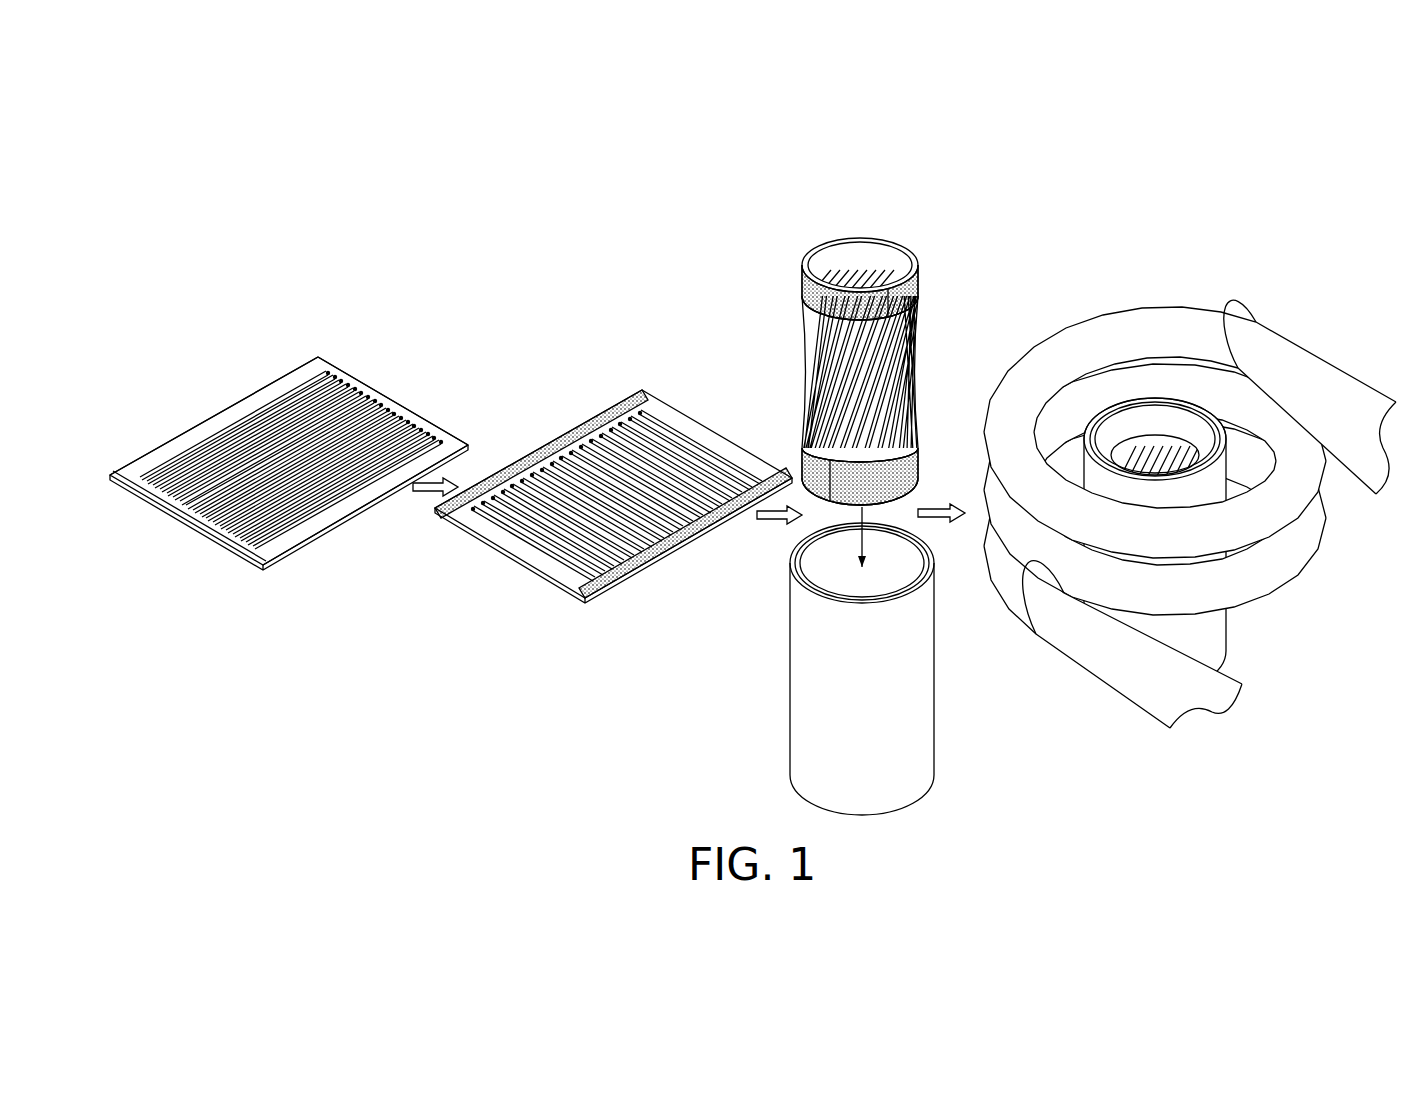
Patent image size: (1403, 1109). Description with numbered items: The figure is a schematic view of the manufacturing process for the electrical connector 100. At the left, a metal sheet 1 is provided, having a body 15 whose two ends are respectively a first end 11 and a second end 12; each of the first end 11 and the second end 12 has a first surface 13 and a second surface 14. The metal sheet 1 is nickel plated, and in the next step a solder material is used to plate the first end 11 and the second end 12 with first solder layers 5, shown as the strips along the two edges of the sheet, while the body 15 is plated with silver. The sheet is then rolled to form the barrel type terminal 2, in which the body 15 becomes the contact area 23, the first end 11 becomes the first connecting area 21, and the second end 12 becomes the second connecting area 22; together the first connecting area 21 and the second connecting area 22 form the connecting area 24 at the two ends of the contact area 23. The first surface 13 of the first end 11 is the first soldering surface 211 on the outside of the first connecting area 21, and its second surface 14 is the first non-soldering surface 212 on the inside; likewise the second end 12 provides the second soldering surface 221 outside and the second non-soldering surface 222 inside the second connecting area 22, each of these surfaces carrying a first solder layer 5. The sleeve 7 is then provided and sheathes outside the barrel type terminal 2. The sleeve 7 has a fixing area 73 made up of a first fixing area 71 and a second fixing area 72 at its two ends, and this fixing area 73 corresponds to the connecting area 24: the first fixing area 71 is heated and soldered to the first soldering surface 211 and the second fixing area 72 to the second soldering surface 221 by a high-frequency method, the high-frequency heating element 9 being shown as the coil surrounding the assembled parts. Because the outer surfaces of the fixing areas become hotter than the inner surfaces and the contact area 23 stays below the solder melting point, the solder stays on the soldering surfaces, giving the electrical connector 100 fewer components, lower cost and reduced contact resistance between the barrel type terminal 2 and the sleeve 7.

The metal sheet 1 is at (451, 472).
The first end 11 is at (207, 430).
The second end 12 is at (283, 543).
The first surface 13 is at (167, 455).
The second surface 14 is at (217, 414).
The body 15 is at (200, 527).
The first solder layer 5 is at (610, 407).
The barrel type terminal 2 is at (858, 341).
The first connecting area 21 is at (836, 266).
The first soldering surface 211 is at (803, 306).
The first non-soldering surface 212 is at (823, 258).
The second connecting area 22 is at (854, 450).
The second soldering surface 221 is at (808, 468).
The second non-soldering surface 222 is at (808, 417).
The contact area 23 is at (828, 375).
The connecting area 24 is at (967, 457).
The sleeve 7 is at (825, 669).
The first fixing area 71 is at (803, 600).
The second fixing area 72 is at (810, 782).
The fixing area 73 is at (716, 590).
The high-frequency heating element 9 is at (1190, 489).
The electrical connector 100 is at (1226, 632).